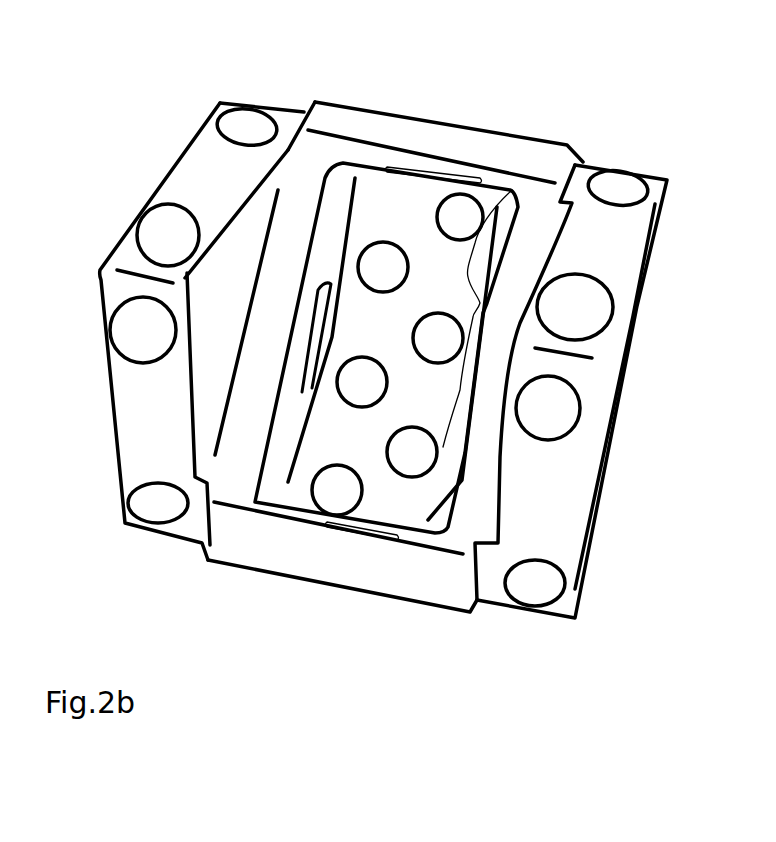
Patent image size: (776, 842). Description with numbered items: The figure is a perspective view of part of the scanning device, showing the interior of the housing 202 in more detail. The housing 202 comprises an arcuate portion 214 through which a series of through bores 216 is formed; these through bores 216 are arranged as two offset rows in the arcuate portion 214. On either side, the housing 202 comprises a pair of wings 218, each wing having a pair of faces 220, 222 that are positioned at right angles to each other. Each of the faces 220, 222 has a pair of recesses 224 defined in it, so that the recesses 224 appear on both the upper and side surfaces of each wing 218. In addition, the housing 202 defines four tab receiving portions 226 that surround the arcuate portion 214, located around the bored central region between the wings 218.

The housing 202 is at (470, 142).
The arcuate portion 214 is at (410, 220).
The through bores 216 is at (372, 262).
The wings 218 is at (128, 393).
The face 220 is at (203, 152).
The face 222 is at (125, 423).
The recesses 224 is at (240, 127).
The tab receiving portions 226 is at (432, 168).